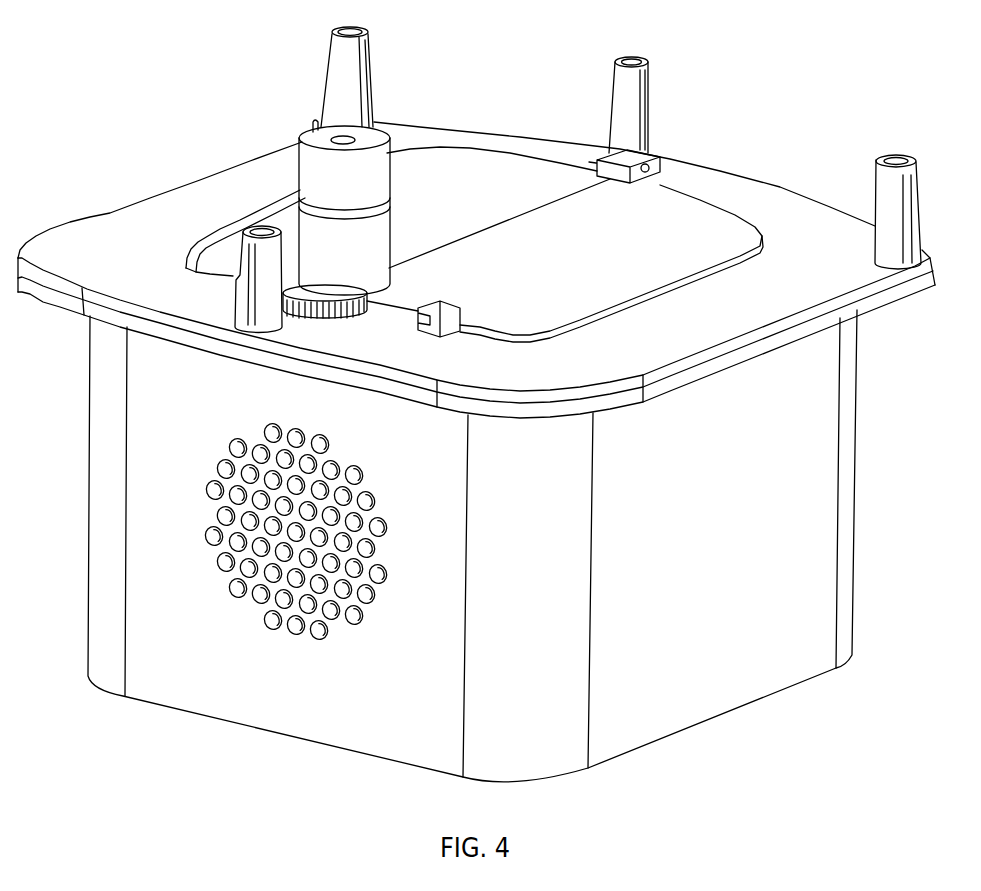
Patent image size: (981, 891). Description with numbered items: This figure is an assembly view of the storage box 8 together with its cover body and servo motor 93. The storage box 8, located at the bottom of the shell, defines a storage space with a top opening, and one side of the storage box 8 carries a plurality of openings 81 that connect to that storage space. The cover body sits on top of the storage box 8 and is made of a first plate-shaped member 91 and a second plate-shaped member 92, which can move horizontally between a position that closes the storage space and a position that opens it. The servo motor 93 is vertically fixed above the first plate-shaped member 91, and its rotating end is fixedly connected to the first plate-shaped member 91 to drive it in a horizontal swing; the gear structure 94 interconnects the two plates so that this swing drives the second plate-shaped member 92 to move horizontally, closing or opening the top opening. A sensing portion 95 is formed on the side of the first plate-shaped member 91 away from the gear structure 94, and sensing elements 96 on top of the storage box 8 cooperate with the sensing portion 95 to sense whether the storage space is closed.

The storage box 8 is at (137, 238).
The openings 81 is at (300, 630).
The first plate-shaped member 91 is at (690, 217).
The second plate-shaped member 92 is at (487, 167).
The servo motor 93 is at (310, 173).
The gear structure 94 is at (318, 318).
The sensing portion 95 is at (650, 166).
The sensing elements 96 is at (610, 157).